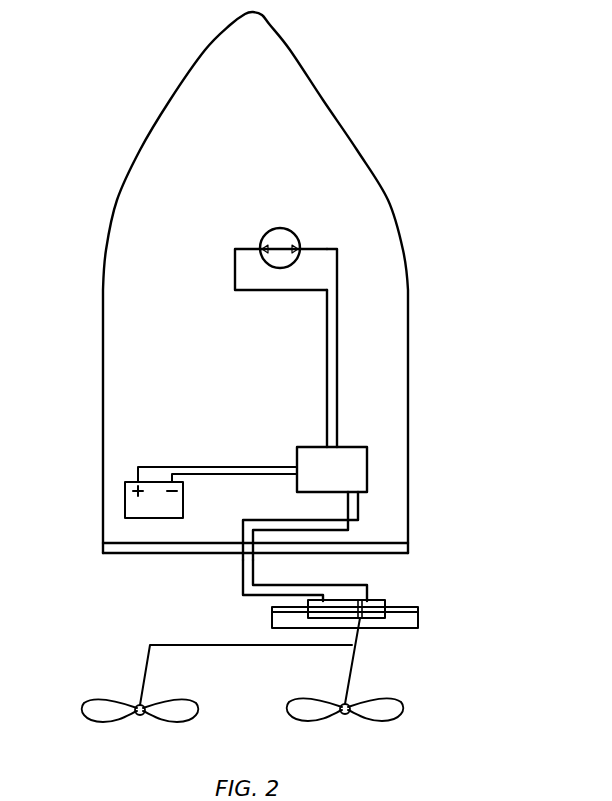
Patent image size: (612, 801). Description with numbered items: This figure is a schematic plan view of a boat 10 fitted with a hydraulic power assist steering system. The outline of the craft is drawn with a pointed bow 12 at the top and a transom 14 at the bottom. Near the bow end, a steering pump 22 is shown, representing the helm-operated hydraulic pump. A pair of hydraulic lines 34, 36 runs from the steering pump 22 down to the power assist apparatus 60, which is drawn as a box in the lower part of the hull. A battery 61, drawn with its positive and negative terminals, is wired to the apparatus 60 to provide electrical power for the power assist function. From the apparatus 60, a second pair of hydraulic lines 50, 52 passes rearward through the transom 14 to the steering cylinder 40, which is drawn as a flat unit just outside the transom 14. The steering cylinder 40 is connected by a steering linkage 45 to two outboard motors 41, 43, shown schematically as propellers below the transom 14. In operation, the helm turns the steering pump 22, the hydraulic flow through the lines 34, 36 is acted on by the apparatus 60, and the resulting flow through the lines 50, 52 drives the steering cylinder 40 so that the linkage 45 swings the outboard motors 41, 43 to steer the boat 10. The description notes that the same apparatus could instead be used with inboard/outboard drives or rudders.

The boat 10 is at (445, 360).
The bow 12 is at (253, 33).
The transom 14 is at (338, 545).
The steering pump 22 is at (277, 246).
The hydraulic line 34 is at (338, 266).
The hydraulic line 36 is at (280, 291).
The steering cylinder 40 is at (377, 602).
The outboard motor 41 is at (90, 707).
The outboard motor 43 is at (388, 710).
The steering linkage 45 is at (357, 662).
The hydraulic line 50 is at (357, 508).
The hydraulic line 52 is at (243, 527).
The apparatus 60 is at (337, 473).
The battery 61 is at (157, 505).